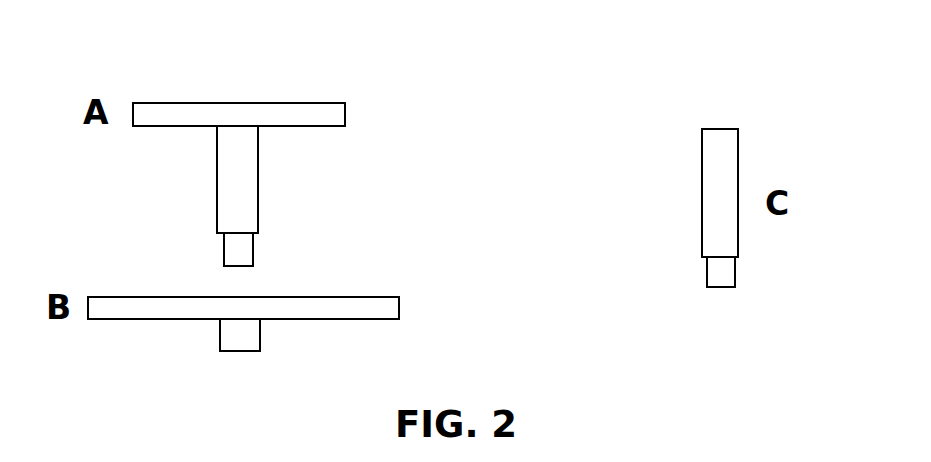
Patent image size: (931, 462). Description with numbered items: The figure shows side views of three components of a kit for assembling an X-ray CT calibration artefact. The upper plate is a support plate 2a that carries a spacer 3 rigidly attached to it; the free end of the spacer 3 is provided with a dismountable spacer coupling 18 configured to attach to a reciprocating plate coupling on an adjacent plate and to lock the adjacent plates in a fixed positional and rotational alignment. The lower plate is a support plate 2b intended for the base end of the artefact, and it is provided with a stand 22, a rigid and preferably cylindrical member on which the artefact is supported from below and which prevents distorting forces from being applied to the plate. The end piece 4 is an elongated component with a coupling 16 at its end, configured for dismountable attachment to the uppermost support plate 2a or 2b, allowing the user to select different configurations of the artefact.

In FIG. 2A, the support plate 2a is at (363, 98).
In FIG. 2A, the spacer 3 is at (253, 185).
In FIG. 2A, the spacer coupling 18 is at (250, 248).
In FIG. 2B, the support plate 2b is at (405, 288).
In FIG. 2B, the stand 22 is at (255, 341).
In FIG. 2C, the end piece 4 is at (675, 135).
In FIG. 2C, the coupling 16 is at (728, 274).